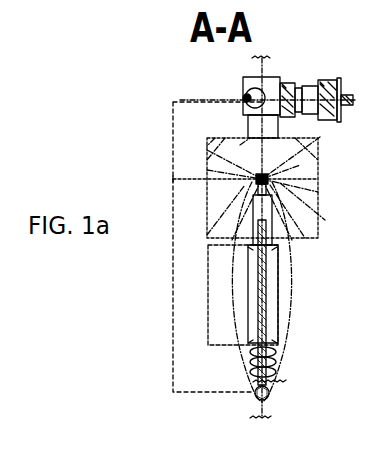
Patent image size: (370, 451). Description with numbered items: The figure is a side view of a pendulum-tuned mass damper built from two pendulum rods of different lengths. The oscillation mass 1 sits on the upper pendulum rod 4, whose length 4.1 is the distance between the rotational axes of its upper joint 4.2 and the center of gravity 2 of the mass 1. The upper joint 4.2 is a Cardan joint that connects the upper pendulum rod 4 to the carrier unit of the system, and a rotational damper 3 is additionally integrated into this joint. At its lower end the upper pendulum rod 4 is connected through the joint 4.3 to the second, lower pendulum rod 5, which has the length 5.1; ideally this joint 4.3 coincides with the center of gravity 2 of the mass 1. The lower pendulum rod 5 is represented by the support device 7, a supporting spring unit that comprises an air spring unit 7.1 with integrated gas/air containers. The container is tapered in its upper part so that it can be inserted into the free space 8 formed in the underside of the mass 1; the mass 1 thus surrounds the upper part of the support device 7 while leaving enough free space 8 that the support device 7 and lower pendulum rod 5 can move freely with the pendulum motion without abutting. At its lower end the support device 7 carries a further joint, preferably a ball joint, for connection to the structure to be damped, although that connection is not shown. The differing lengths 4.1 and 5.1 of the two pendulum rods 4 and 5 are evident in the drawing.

The oscillation mass 1 is at (310, 185).
The center of gravity 2 is at (300, 165).
The rotational damper 3 is at (317, 87).
The upper pendulum rod 4 is at (246, 137).
The length of the upper pendulum rod 4.1 is at (173, 160).
The upper joint 4.2 is at (240, 88).
The joint 4.3 is at (258, 176).
The lower pendulum rod 5 is at (185, 295).
The length of the lower pendulum rod 5.1 is at (173, 274).
The support device 7 is at (296, 285).
The air spring unit 7.1 is at (276, 362).
The free space 8 is at (297, 230).